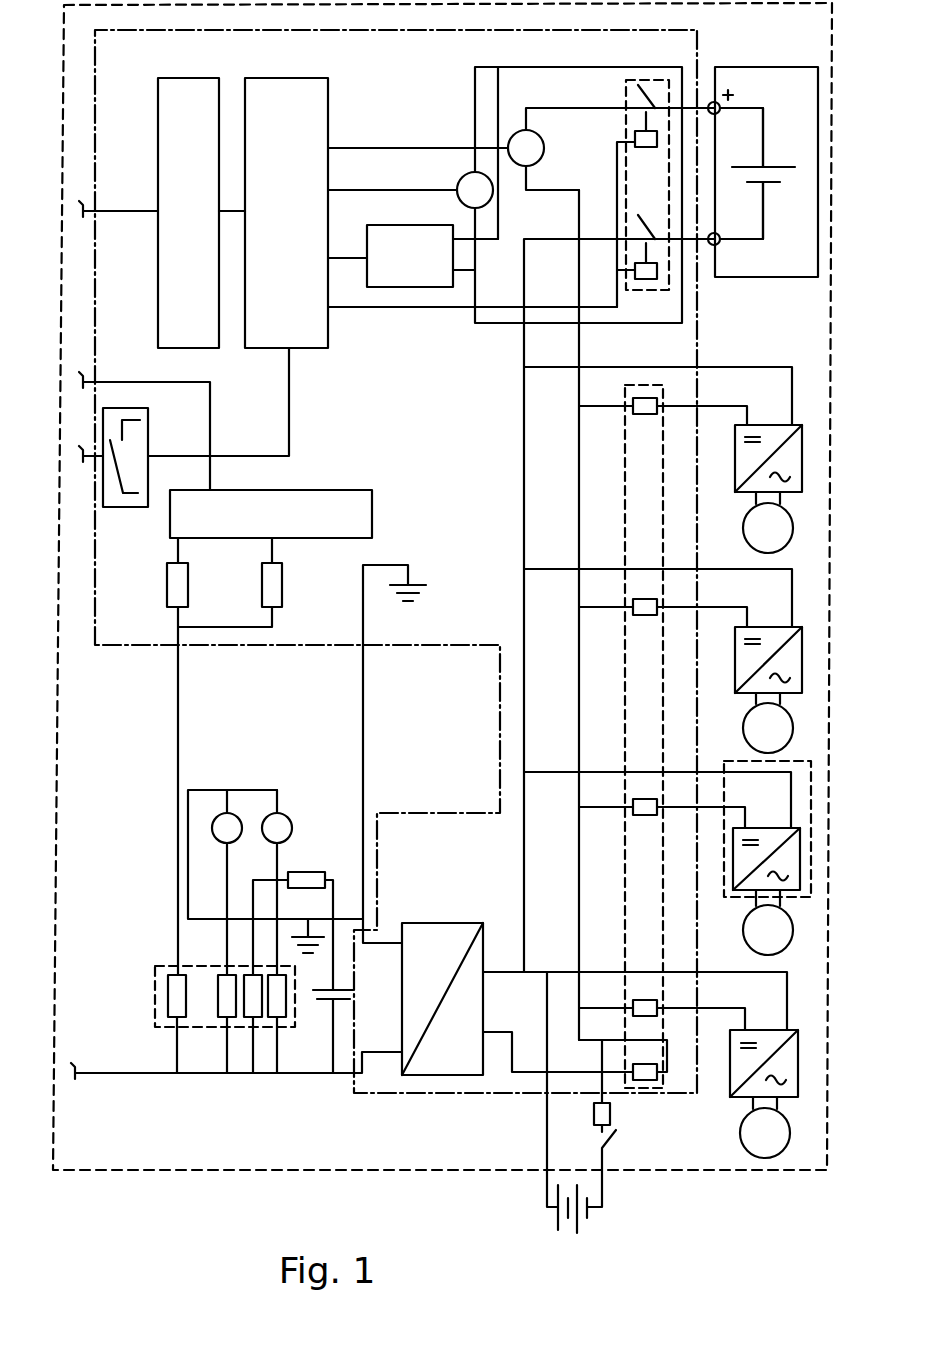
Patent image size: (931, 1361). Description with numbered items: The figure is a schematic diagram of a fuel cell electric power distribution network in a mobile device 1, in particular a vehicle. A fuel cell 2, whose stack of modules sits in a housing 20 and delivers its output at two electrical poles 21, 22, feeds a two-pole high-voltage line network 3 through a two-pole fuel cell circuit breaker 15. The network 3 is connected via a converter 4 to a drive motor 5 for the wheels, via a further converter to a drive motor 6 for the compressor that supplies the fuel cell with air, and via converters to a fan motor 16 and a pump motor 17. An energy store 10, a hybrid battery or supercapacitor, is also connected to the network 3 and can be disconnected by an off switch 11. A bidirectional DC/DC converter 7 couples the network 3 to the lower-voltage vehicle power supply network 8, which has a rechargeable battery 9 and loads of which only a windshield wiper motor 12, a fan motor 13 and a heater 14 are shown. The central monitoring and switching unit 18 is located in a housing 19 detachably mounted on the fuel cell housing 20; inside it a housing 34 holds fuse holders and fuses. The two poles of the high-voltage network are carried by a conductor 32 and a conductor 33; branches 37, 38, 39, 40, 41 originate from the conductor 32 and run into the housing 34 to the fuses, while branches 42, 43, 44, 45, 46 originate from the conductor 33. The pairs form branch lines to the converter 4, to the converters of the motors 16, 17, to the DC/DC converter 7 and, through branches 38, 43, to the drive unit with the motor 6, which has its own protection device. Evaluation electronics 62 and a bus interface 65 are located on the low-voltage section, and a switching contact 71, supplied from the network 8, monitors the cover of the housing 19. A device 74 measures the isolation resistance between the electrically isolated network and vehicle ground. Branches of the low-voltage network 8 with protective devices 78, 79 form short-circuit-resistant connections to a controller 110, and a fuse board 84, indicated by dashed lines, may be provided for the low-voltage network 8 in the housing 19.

The mobile device 1 is at (150, 1152).
The fuel cell 2 is at (757, 80).
The line network 3 is at (508, 344).
The converter 4 is at (803, 448).
The drive motor 5 is at (768, 522).
The drive motor 6 is at (768, 723).
The DC/DC converter 7 is at (425, 932).
The vehicle power supply network 8 is at (228, 927).
The rechargeable battery 9 is at (326, 1002).
The energy store 10 is at (551, 1210).
The off switch 11 is at (617, 1136).
The windshield wiper motor 12 is at (222, 834).
The fan motor 13 is at (284, 822).
The heater 14 is at (308, 874).
The fuel cell circuit breaker 15 is at (643, 193).
The fan motor 16 is at (768, 922).
The pump motor 17 is at (765, 1127).
The central monitoring and switching unit 18 is at (678, 345).
The housing 19 is at (697, 295).
The housing 20 is at (782, 278).
The electrical output 21 is at (719, 113).
The electrical output 22 is at (719, 235).
The conductor 32 is at (582, 345).
The conductor 33 is at (521, 348).
The housing 34 is at (644, 736).
The branch 37 is at (595, 408).
The branch 38 is at (595, 609).
The branch 39 is at (596, 809).
The branch 40 is at (593, 1008).
The branch 41 is at (593, 1044).
The branch 42 is at (545, 370).
The branch 43 is at (612, 568).
The branch 44 is at (612, 770).
The branch 45 is at (612, 970).
The branch 46 is at (510, 975).
The evaluation electronics 62 is at (328, 97).
The bus interface 65 is at (178, 92).
The switching contact 71 is at (135, 440).
The isolation resistance measuring device 74 is at (432, 256).
The protective device 78 is at (168, 583).
The protective device 79 is at (280, 584).
The fuse board 84 is at (157, 1030).
The controller 110 is at (374, 518).